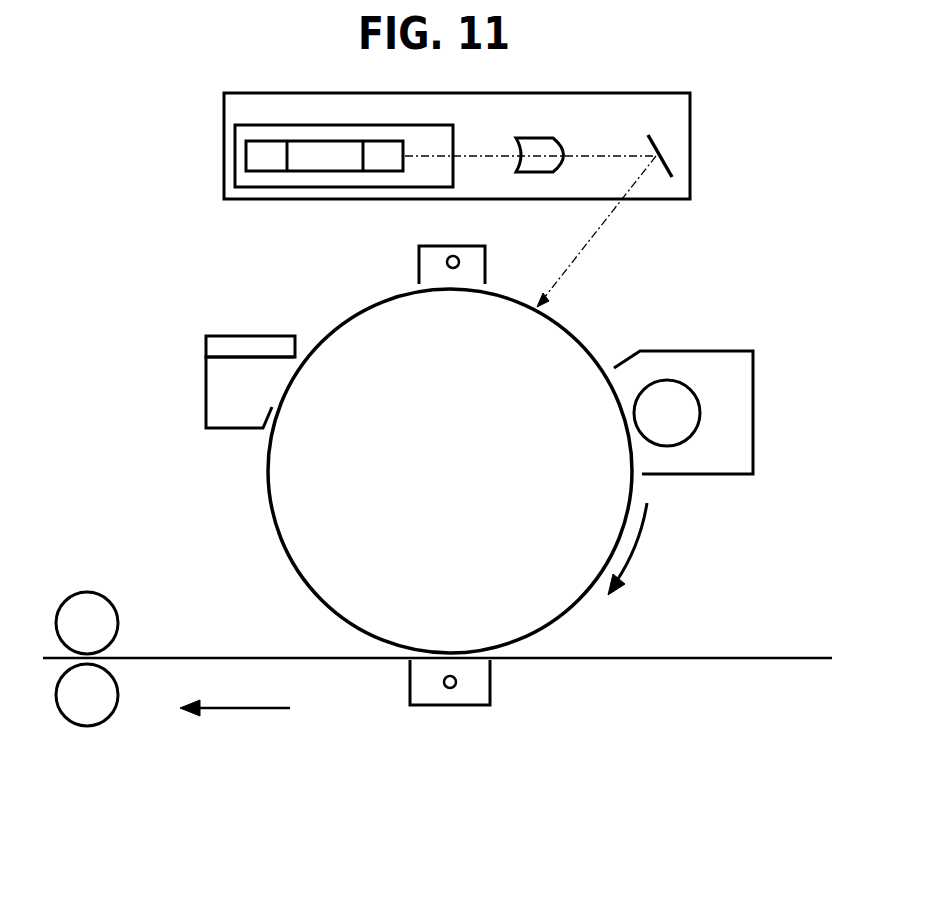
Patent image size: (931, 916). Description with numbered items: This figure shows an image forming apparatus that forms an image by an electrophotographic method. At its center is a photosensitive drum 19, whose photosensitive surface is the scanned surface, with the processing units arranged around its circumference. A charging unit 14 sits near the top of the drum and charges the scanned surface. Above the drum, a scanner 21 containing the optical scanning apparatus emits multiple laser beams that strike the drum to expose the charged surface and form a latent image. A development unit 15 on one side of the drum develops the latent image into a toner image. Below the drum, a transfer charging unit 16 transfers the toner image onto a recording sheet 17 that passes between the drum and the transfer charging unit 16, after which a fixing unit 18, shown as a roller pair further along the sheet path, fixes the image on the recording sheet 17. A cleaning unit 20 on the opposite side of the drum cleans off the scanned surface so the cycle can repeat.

The charging unit 14 is at (418, 254).
The development unit 15 is at (753, 415).
The transfer charging unit 16 is at (448, 706).
The recording sheet 17 is at (718, 657).
The fixing unit 18 is at (87, 727).
The photosensitive drum 19 is at (269, 519).
The cleaning unit 20 is at (206, 388).
The scanner 21 is at (690, 145).